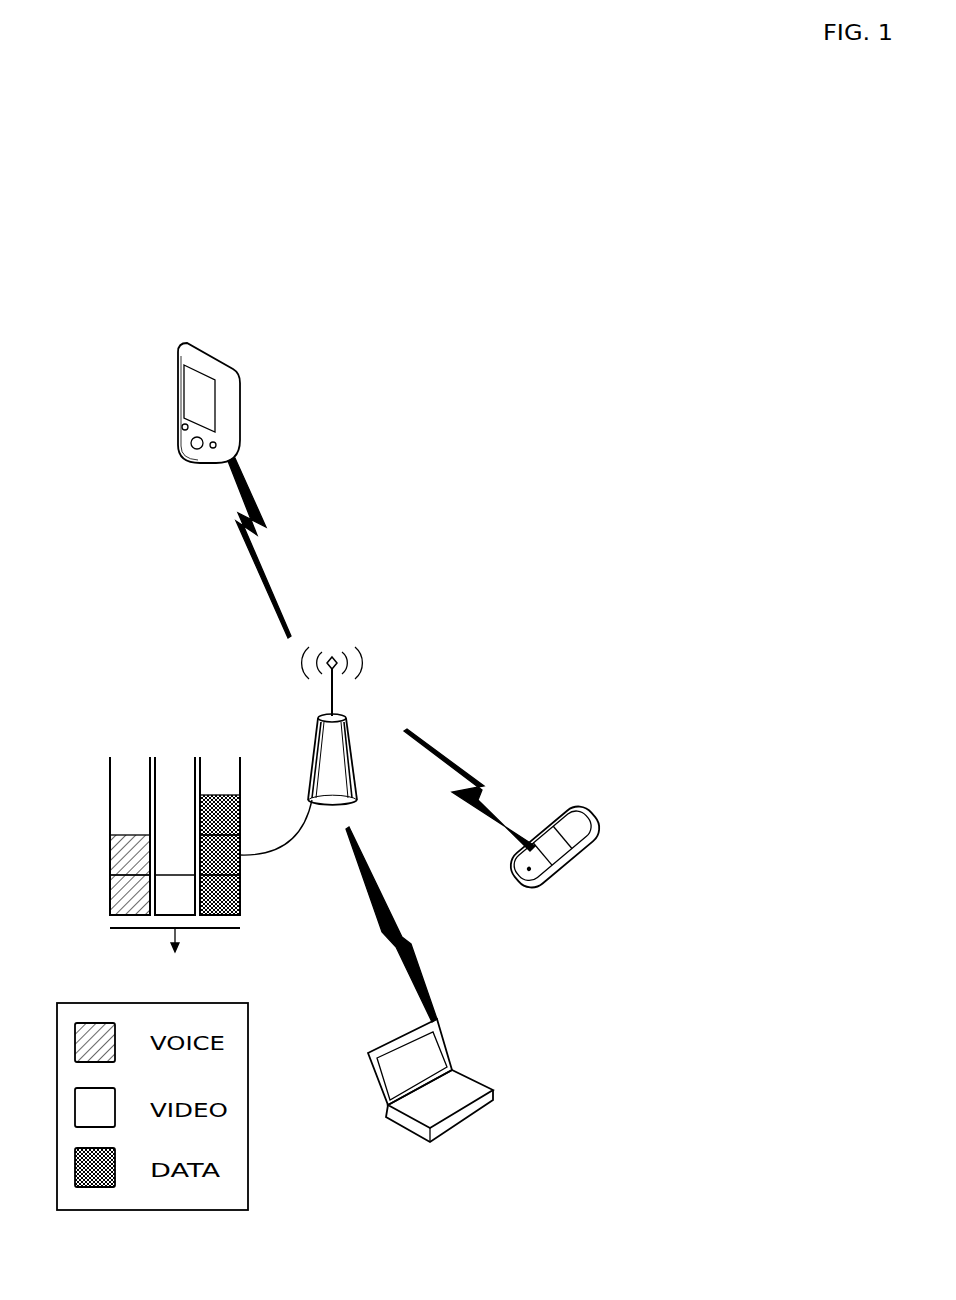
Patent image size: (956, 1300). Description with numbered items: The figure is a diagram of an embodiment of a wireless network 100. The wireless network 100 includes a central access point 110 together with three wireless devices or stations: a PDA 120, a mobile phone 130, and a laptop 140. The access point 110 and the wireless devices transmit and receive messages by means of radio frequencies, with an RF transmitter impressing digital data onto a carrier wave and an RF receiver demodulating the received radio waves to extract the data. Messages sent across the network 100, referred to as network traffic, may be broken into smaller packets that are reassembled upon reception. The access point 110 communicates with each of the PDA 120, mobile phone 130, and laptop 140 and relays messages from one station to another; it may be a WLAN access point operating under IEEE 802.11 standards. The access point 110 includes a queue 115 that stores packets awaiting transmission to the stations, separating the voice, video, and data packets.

The wireless network 100 is at (566, 272).
The access point 110 is at (313, 756).
The queue 115 is at (108, 788).
The PDA 120 is at (226, 361).
The mobile phone 130 is at (577, 809).
The laptop 140 is at (475, 1080).